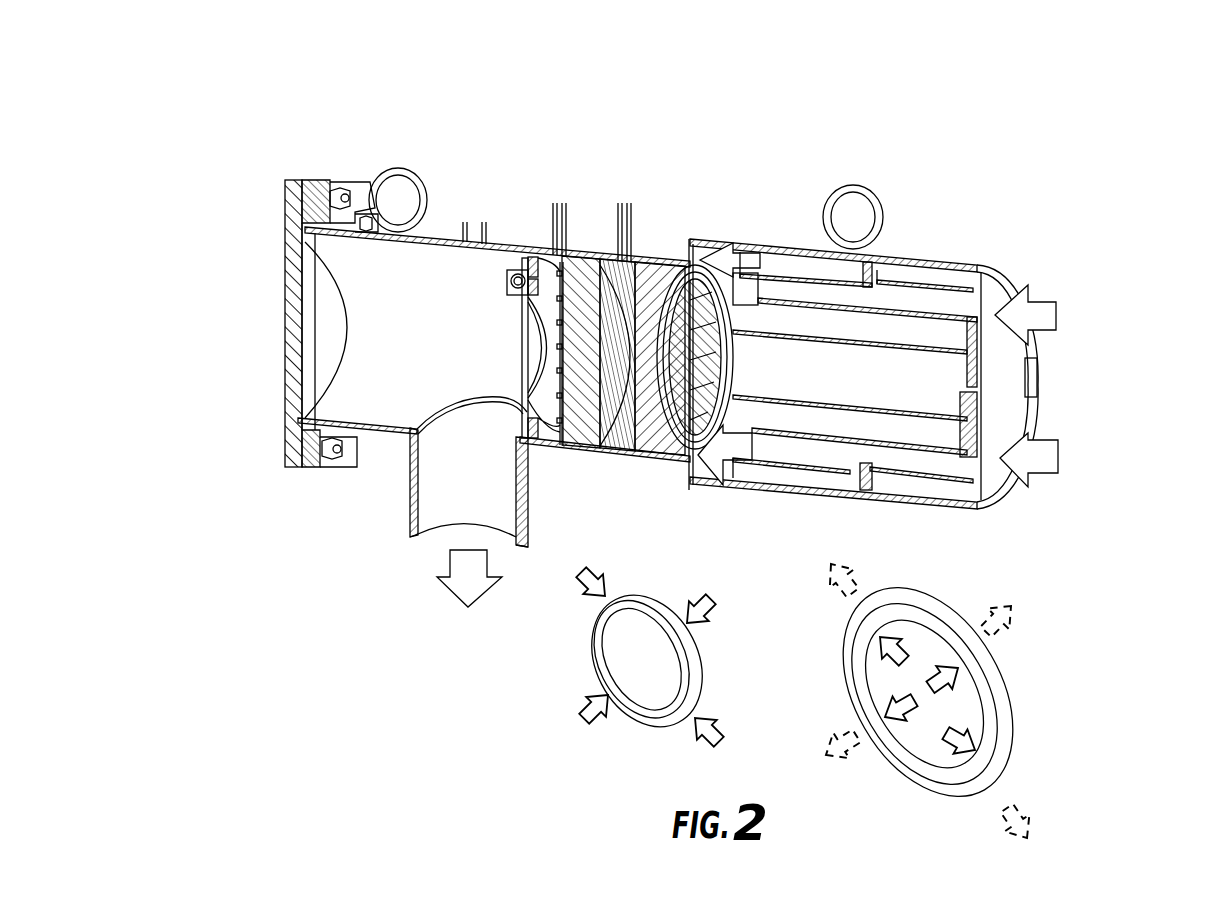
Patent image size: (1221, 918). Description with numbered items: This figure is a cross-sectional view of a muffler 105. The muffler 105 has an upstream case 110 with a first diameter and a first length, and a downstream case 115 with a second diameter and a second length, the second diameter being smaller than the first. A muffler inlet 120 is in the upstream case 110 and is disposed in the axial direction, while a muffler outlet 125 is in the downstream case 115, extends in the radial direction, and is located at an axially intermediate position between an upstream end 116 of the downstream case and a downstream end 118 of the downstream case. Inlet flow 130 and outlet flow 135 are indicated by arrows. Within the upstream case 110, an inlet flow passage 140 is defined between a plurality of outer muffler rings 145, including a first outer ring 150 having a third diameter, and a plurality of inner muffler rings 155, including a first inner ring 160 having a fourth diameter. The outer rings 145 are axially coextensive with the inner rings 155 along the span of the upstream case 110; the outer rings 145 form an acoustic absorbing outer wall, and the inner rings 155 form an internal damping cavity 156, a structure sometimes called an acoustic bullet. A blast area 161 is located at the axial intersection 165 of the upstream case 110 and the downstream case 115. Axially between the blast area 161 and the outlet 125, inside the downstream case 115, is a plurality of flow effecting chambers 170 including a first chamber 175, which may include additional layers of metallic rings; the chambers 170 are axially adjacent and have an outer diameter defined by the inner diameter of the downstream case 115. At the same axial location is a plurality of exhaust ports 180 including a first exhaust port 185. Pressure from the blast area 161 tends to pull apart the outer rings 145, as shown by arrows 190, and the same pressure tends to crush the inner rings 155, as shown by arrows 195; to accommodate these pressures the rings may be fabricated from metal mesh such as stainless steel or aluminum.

The muffler 105 is at (932, 312).
The upstream case 110 is at (828, 147).
The downstream case 115 is at (433, 170).
The upstream end of the downstream case 116 is at (687, 233).
The downstream end of the downstream case 118 is at (283, 315).
The muffler inlet 120 is at (1085, 262).
The muffler outlet 125 is at (365, 523).
The inlet flow 130 is at (1056, 318).
The outlet flow 135 is at (460, 604).
The inlet flow passage 140 is at (963, 467).
The plurality of outer muffler rings 145 is at (953, 248).
The first outer ring 150 is at (1013, 697).
The plurality of inner muffler rings 155 is at (797, 322).
The internal damping cavity 156 is at (953, 402).
The first inner ring 160 is at (700, 688).
The blast area 161 is at (703, 260).
The axial intersection 165 is at (668, 450).
The plurality of flow effecting chambers 170 is at (643, 270).
The first chamber 175 is at (653, 257).
The plurality of exhaust ports 180 is at (490, 152).
The first exhaust port 185 is at (621, 208).
The arrows indicating pressure pulling apart outer rings 190 is at (962, 670).
The arrows indicating pressure crushing inner rings 195 is at (582, 715).